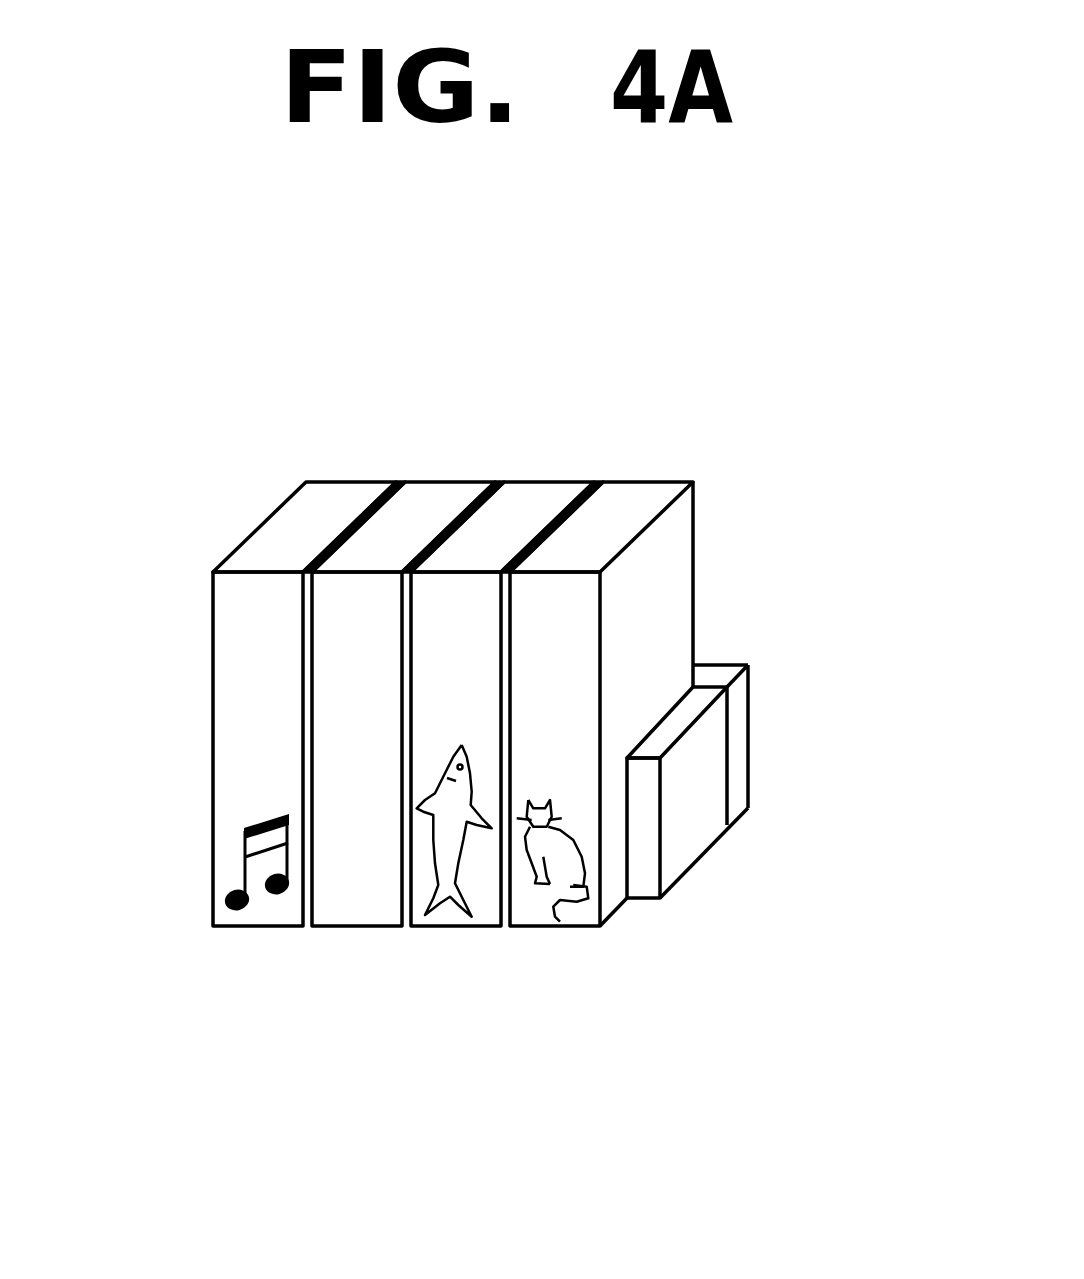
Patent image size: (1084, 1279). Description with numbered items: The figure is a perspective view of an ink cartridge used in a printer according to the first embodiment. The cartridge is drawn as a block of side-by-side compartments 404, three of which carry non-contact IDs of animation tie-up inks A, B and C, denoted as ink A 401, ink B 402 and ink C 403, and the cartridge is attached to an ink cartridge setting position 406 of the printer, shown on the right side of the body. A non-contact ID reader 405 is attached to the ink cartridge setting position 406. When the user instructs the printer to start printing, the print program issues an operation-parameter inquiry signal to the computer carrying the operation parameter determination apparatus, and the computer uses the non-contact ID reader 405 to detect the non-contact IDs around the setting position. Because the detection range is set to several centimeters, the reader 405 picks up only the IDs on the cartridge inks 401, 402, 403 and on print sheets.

The animation tie-up ink A 401 is at (213, 926).
The animation tie-up ink B 402 is at (443, 913).
The animation tie-up ink C 403 is at (577, 912).
The content storage units 404 is at (637, 500).
The non-contact ID reader 405 is at (730, 725).
The ink cartridge setting position 406 is at (687, 787).